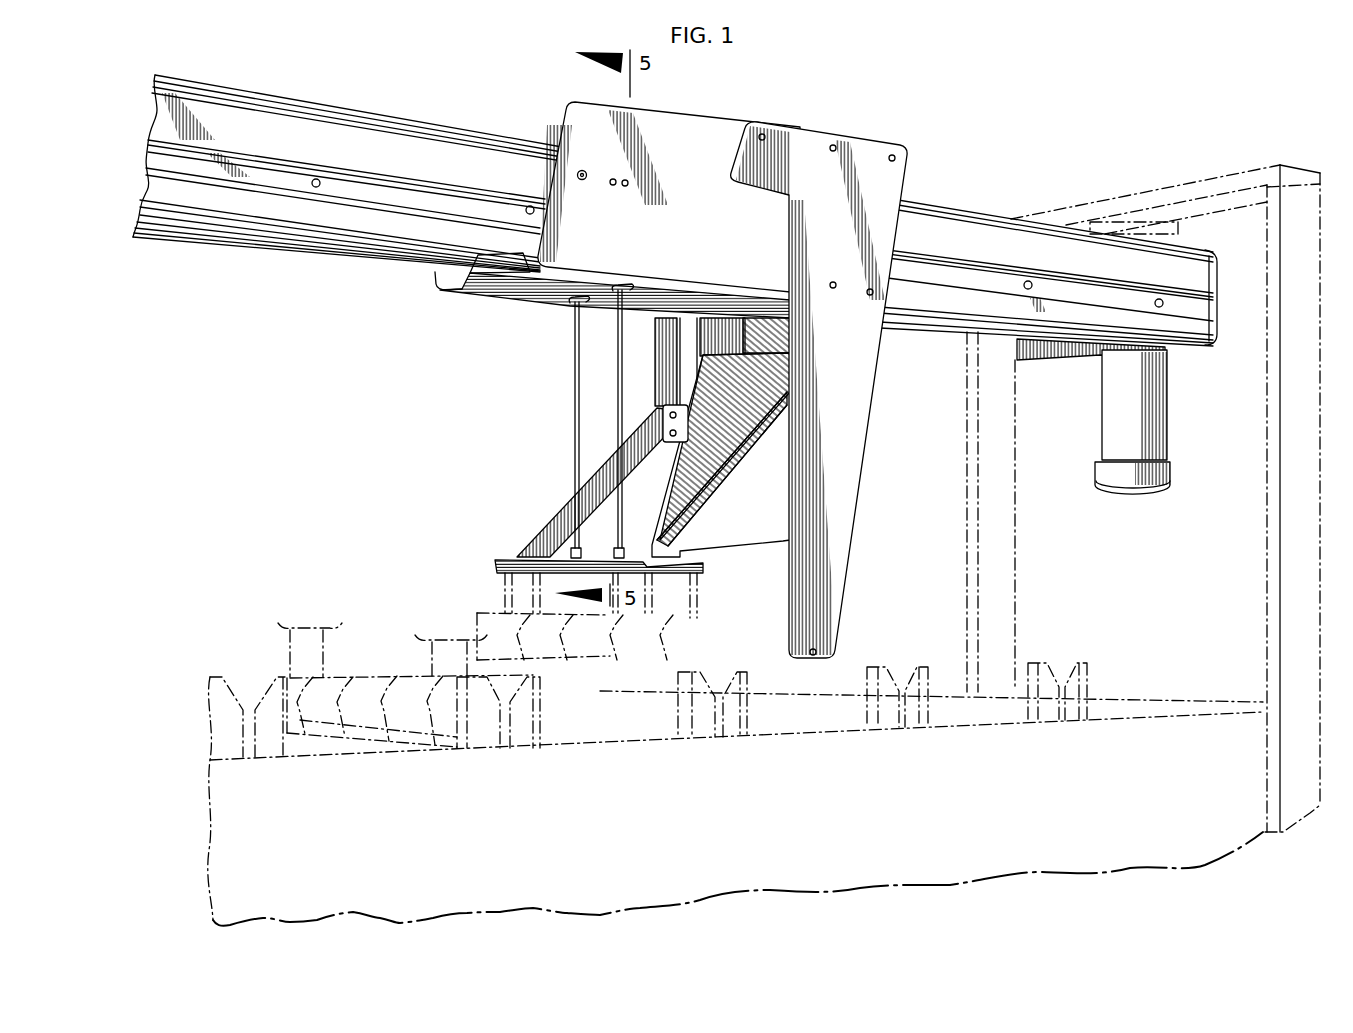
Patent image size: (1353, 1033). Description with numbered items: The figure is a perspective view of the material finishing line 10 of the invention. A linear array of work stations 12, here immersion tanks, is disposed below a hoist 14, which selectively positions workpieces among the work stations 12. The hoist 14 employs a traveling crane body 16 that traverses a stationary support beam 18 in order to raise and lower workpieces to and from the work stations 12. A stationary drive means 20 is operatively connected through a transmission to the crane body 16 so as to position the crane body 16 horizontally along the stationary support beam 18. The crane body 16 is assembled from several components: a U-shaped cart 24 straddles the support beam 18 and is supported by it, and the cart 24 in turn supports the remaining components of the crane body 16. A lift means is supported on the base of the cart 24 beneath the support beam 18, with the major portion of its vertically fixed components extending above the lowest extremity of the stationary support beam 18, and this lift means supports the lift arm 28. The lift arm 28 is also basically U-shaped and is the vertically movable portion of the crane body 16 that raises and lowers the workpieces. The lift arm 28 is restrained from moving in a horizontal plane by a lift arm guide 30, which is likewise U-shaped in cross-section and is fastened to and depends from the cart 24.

The material finishing line 10 is at (1224, 139).
The work stations 12 is at (508, 733).
The hoist 14 is at (631, 209).
The traveling crane body 16 is at (515, 500).
The stationary support beam 18 is at (420, 150).
The stationary drive means 20 is at (1168, 453).
The U shaped cart 24 is at (700, 145).
The lift arm 28 is at (748, 533).
The lift arm guide 30 is at (848, 493).